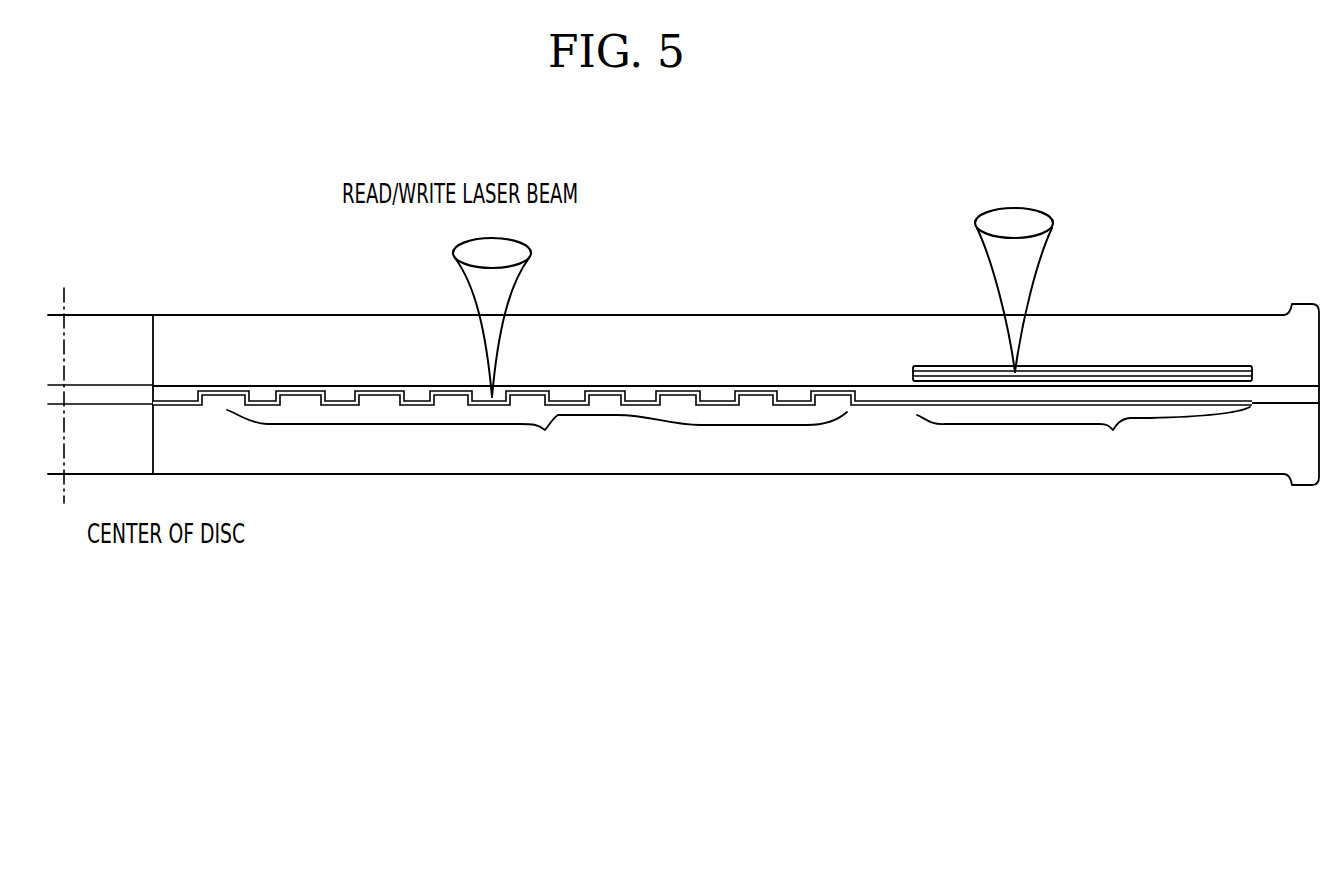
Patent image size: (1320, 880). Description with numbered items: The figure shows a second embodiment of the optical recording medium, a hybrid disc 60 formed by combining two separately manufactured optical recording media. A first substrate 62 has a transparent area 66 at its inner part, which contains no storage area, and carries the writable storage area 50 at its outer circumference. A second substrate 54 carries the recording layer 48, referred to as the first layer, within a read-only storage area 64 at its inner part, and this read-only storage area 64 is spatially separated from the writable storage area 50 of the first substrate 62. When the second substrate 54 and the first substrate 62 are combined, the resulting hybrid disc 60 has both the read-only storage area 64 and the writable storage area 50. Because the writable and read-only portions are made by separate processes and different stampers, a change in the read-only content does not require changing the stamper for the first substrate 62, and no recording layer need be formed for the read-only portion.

The recording layer 48 is at (645, 406).
The writable storage area 50 is at (1082, 419).
The second substrate 54 is at (778, 453).
The hybrid disc 60 is at (1125, 527).
The first substrate 62 is at (820, 335).
The read-only storage area 64 is at (392, 442).
The transparent area 66 is at (635, 385).